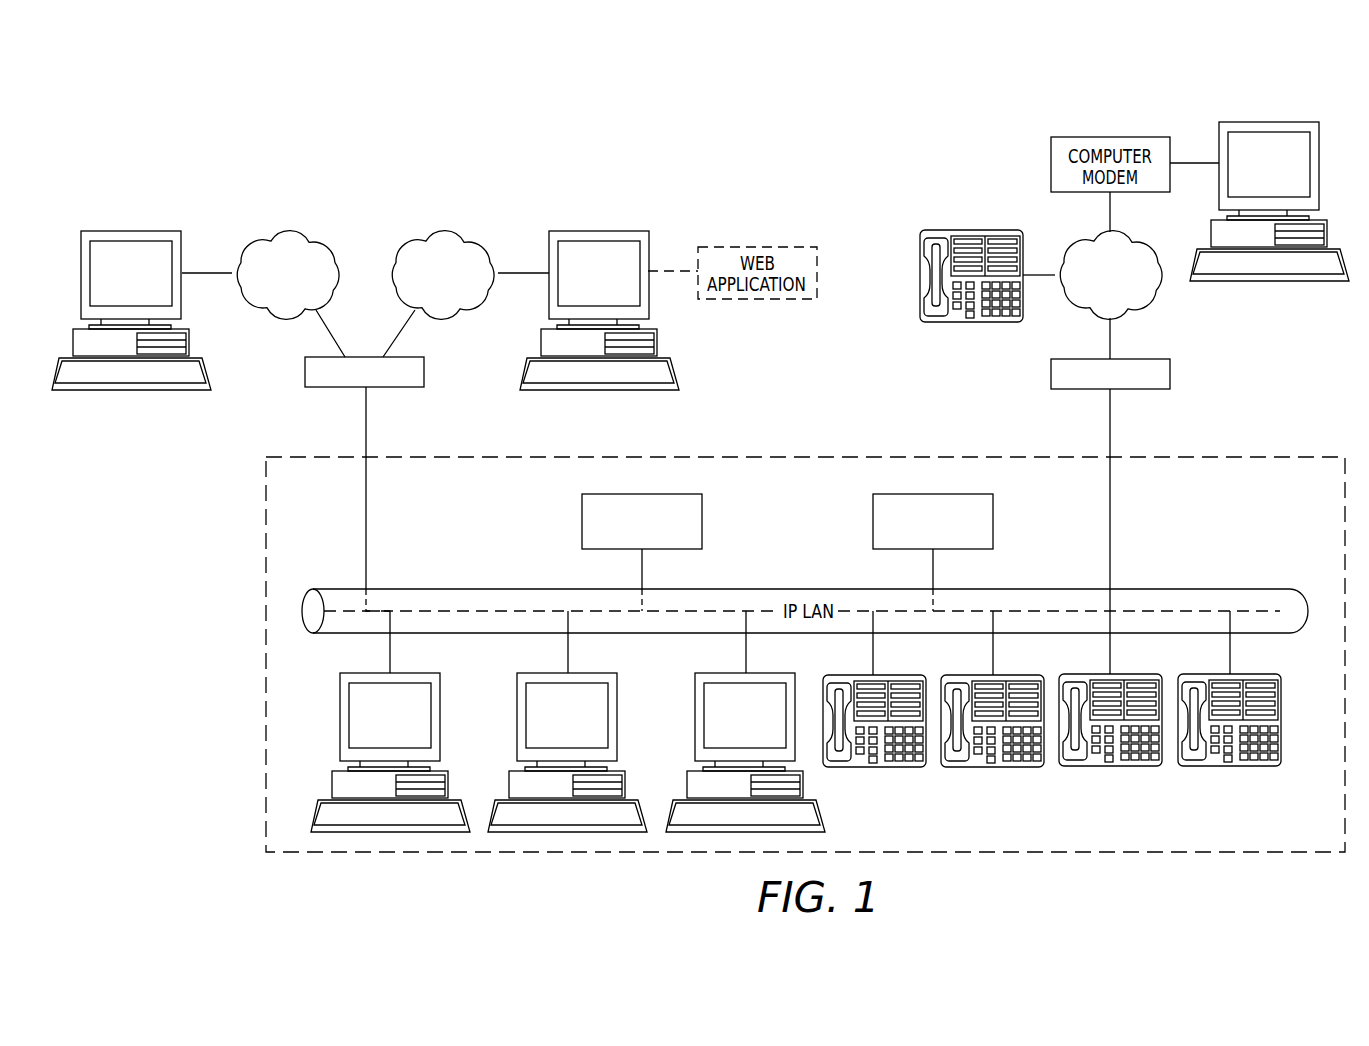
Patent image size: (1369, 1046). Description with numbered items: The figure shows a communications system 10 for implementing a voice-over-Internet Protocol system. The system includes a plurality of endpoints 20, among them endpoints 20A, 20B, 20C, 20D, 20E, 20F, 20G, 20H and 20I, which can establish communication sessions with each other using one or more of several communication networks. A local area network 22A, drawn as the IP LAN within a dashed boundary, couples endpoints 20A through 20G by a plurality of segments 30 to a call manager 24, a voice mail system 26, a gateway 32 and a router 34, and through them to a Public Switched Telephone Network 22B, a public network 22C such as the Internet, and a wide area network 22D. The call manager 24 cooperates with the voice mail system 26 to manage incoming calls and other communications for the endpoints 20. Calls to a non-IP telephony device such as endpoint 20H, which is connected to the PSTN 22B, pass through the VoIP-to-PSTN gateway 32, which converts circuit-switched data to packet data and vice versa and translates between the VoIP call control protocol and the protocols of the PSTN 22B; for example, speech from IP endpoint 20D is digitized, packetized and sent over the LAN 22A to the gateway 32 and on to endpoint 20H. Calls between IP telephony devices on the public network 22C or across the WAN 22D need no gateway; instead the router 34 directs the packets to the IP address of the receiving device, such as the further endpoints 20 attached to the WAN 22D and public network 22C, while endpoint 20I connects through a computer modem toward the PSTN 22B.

The communications system 10 is at (120, 118).
The endpoints 20 is at (128, 231).
The endpoint 20A is at (408, 673).
The endpoint 20B is at (587, 673).
The endpoint 20C is at (765, 673).
The IP endpoint 20D is at (895, 675).
The endpoint 20E is at (1013, 675).
The endpoint 20F is at (1143, 674).
The endpoint 20G is at (1260, 674).
The PSTN endpoint 20H is at (972, 230).
The endpoint 20I is at (1270, 122).
The local area network 22A is at (820, 457).
The Public Switched Telephone Network 22B is at (1140, 238).
The public network 22C is at (472, 233).
The wide area network 22D is at (317, 233).
The call manager 24 is at (933, 494).
The voice mail system 26 is at (640, 494).
The segments 30 is at (366, 513).
The gateway 32 is at (1170, 375).
The router 34 is at (424, 373).